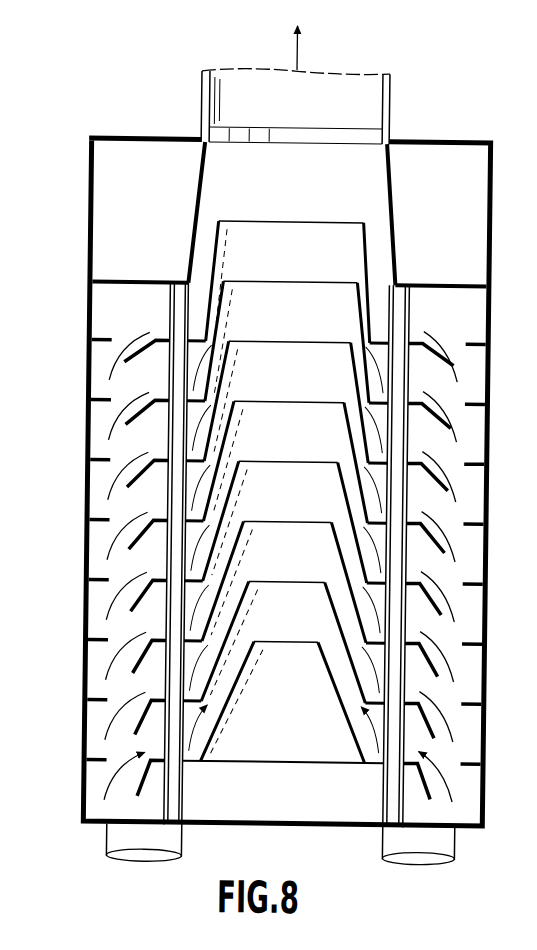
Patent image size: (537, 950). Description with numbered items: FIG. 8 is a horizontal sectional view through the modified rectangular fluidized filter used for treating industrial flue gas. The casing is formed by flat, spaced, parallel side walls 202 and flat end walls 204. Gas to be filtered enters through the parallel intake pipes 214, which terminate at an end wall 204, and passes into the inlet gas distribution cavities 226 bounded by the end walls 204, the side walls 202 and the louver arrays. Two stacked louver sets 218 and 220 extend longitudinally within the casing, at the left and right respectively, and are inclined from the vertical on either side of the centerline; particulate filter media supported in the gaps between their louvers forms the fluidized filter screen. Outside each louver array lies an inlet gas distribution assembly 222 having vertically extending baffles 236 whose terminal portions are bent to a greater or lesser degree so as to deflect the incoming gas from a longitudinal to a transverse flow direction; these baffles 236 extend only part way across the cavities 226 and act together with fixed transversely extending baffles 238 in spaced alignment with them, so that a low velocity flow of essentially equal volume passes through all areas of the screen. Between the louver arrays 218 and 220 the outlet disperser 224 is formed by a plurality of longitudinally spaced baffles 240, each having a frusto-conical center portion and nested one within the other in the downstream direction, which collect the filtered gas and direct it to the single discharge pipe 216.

The side walls 202 is at (84, 508).
The end walls 204 is at (446, 137).
The intake pipes 214 is at (110, 842).
The discharge pipe 216 is at (387, 100).
The stacked louver set 218 is at (418, 302).
The stacked louver set 220 is at (170, 293).
The inlet gas distribution assembly 222 is at (119, 691).
The outlet disperser 224 is at (337, 219).
The inlet gas distribution cavities 226 is at (122, 454).
The vertically extending baffles 236 is at (454, 360).
The fixed transversely extending baffles 238 is at (487, 428).
The baffles 240 is at (378, 296).